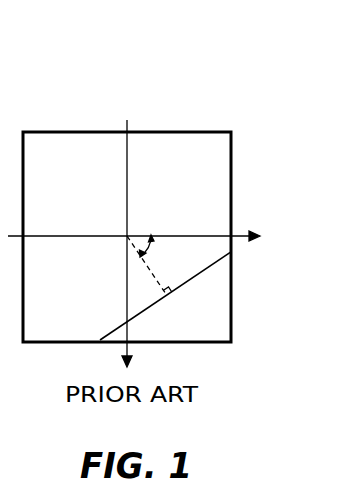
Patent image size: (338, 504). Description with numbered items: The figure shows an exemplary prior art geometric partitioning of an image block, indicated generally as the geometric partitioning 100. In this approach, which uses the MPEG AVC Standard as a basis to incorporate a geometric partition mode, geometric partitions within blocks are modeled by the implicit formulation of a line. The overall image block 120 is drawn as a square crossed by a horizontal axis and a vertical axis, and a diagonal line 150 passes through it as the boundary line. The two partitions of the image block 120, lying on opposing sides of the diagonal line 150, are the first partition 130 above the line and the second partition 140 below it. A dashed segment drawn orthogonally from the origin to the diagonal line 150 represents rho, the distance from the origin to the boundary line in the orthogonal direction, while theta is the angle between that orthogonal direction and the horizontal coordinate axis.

The geometric partitioning of an image block 100 is at (128, 79).
The image block 120 is at (37, 131).
The first partition 130 is at (220, 210).
The second partition 140 is at (218, 315).
The diagonal line 150 is at (203, 270).